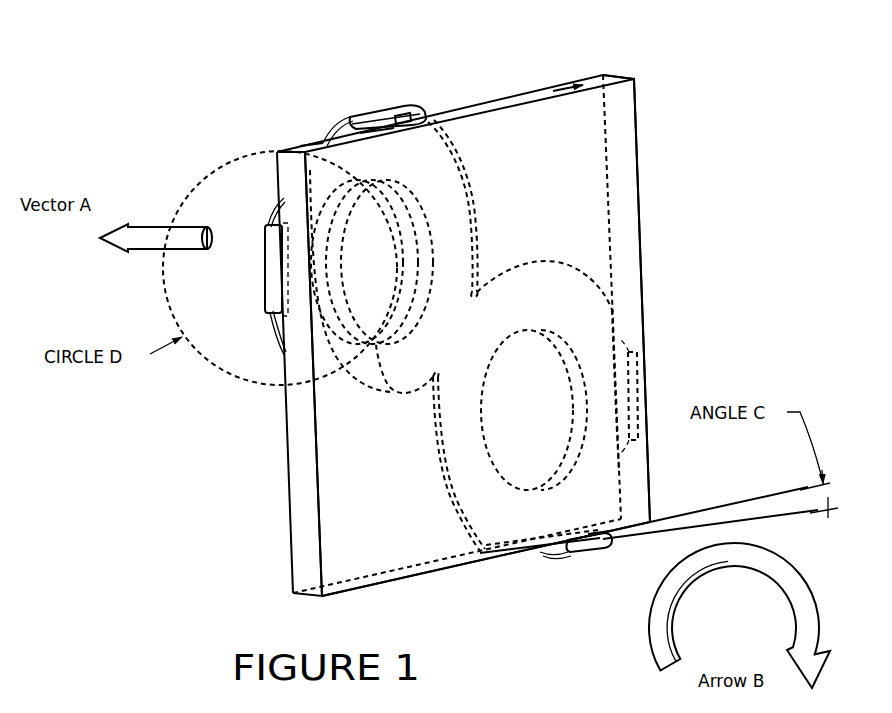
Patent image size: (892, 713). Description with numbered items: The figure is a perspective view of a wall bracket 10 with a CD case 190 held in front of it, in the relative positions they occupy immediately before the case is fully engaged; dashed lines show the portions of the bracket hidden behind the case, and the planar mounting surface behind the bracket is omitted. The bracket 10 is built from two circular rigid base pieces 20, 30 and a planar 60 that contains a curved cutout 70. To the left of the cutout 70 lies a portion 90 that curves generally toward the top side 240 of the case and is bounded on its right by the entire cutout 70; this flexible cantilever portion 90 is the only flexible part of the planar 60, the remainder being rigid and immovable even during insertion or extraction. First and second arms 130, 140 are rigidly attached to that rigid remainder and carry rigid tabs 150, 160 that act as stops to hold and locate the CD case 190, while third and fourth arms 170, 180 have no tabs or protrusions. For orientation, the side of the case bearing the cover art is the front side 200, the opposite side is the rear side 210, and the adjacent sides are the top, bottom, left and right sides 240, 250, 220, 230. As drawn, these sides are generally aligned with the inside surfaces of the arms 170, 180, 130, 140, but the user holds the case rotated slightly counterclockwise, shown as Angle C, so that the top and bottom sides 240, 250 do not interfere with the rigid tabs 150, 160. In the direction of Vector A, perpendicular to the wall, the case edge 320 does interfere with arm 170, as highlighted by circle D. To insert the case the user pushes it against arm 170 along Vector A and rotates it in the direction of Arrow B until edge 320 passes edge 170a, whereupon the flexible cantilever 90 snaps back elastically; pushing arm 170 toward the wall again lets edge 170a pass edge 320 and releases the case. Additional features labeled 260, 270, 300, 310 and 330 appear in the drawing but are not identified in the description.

The bracket 10 is at (452, 254).
The circular rigid base piece 20 is at (408, 218).
The circular rigid base piece 30 is at (551, 360).
The planar 60 is at (425, 344).
The cutout 70 is at (387, 349).
The flexible cantilever portion 90 is at (349, 374).
The first arm 130 is at (374, 112).
The second arm 140 is at (604, 551).
The tab 150 is at (399, 116).
The tab 160 is at (588, 553).
The third arm 170 is at (268, 273).
The edge of third arm 170a is at (284, 277).
The fourth arm 180 is at (643, 385).
The CD case 190 is at (637, 78).
The front side 200 is at (566, 157).
The rear side 210 is at (571, 206).
The left side 220 is at (302, 497).
The right side 230 is at (627, 232).
The top side 240 is at (499, 101).
The bottom side 250 is at (446, 562).
The top leaf spring 260 is at (346, 120).
The bottom mark 270 is at (612, 534).
The top left mark 300 is at (307, 138).
The rear bottom edge 310 is at (475, 560).
The edge of CD case 320 is at (284, 376).
The rear right groove 330 is at (622, 484).